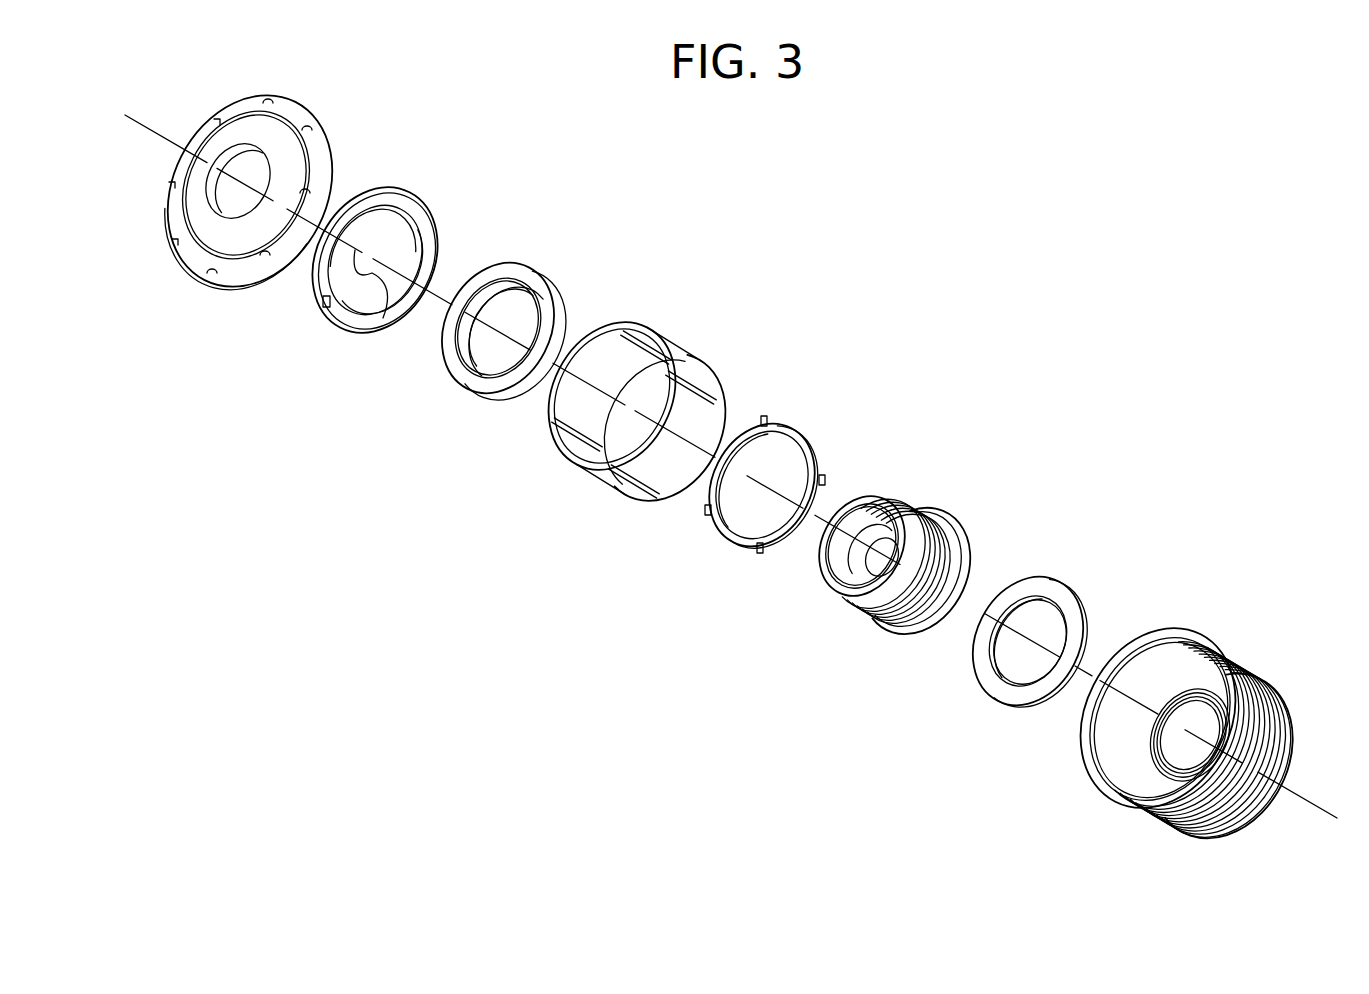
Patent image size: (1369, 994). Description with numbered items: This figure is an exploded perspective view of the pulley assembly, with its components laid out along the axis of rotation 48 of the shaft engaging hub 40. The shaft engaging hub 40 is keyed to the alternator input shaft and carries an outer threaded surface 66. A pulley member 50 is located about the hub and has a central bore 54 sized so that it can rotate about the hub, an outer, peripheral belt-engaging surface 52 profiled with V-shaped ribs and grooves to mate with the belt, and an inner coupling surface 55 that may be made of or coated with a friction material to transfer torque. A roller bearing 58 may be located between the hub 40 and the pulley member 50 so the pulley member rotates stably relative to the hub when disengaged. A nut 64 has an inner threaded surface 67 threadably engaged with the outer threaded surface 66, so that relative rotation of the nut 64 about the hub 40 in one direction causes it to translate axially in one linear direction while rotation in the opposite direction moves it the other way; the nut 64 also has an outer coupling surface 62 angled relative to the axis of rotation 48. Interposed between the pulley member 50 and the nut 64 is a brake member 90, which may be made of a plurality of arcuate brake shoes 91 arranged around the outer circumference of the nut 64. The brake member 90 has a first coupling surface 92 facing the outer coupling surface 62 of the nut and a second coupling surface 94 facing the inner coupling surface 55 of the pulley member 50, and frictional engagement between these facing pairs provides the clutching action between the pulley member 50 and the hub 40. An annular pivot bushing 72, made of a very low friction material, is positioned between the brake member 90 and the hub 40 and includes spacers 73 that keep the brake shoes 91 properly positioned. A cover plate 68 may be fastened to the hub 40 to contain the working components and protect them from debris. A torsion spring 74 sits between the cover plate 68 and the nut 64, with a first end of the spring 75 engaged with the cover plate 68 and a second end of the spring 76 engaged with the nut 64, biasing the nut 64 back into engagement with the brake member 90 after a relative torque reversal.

The cover plate 68 is at (322, 143).
The torsion spring 74 is at (366, 265).
The first end of the spring 75 is at (325, 301).
The second end of the spring 76 is at (386, 282).
The nut 64 is at (488, 338).
The inner threaded surface 67 is at (452, 355).
The outer coupling surface 62 is at (495, 397).
The brake member 90 is at (632, 415).
The arcuate brake shoes 91 is at (708, 373).
The first coupling surface 92 is at (600, 345).
The second coupling surface 94 is at (667, 487).
The pivot bushing 72 is at (762, 499).
The spacers 73 is at (758, 553).
The axis of rotation 48 is at (887, 563).
The outer threaded surface 66 is at (862, 597).
The shaft engaging hub 40 is at (933, 620).
The roller bearing 58 is at (1050, 597).
The pulley member 50 is at (1170, 725).
The central bore 54 is at (1097, 765).
The inner coupling surface 55 is at (1132, 777).
The belt-engaging surface 52 is at (1183, 818).